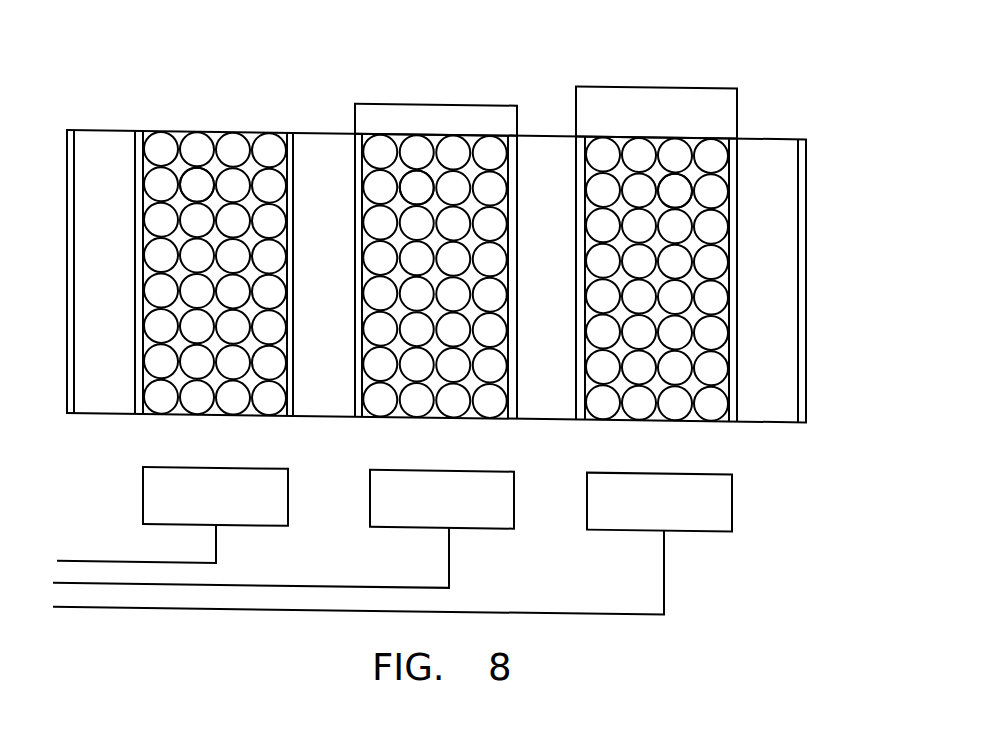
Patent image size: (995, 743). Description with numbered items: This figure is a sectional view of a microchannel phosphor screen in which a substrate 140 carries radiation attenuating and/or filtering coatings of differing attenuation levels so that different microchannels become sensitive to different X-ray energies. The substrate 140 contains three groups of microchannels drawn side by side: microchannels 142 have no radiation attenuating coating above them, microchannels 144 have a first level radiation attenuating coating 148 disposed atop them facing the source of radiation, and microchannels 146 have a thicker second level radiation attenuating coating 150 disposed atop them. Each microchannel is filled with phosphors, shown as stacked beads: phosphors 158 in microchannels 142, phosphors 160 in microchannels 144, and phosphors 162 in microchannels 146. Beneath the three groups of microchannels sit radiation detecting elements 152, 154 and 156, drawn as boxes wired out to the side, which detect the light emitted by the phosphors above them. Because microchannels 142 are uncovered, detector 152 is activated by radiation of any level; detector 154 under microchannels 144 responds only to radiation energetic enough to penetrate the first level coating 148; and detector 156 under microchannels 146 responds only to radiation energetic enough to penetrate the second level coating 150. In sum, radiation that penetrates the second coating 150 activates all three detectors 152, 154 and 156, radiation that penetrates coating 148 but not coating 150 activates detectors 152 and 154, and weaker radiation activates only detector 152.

The substrate 140 is at (822, 277).
The microchannels 142 is at (140, 413).
The microchannels 144 is at (362, 413).
The microchannels 146 is at (585, 413).
The first level radiation attenuating coating 148 is at (455, 111).
The second level radiation attenuating coating 150 is at (662, 80).
The radiation detecting element 152 is at (288, 492).
The radiation detecting element 154 is at (514, 504).
The radiation detecting element 156 is at (732, 496).
The phosphors 158 is at (195, 176).
The phosphors 160 is at (420, 179).
The phosphors 162 is at (678, 177).